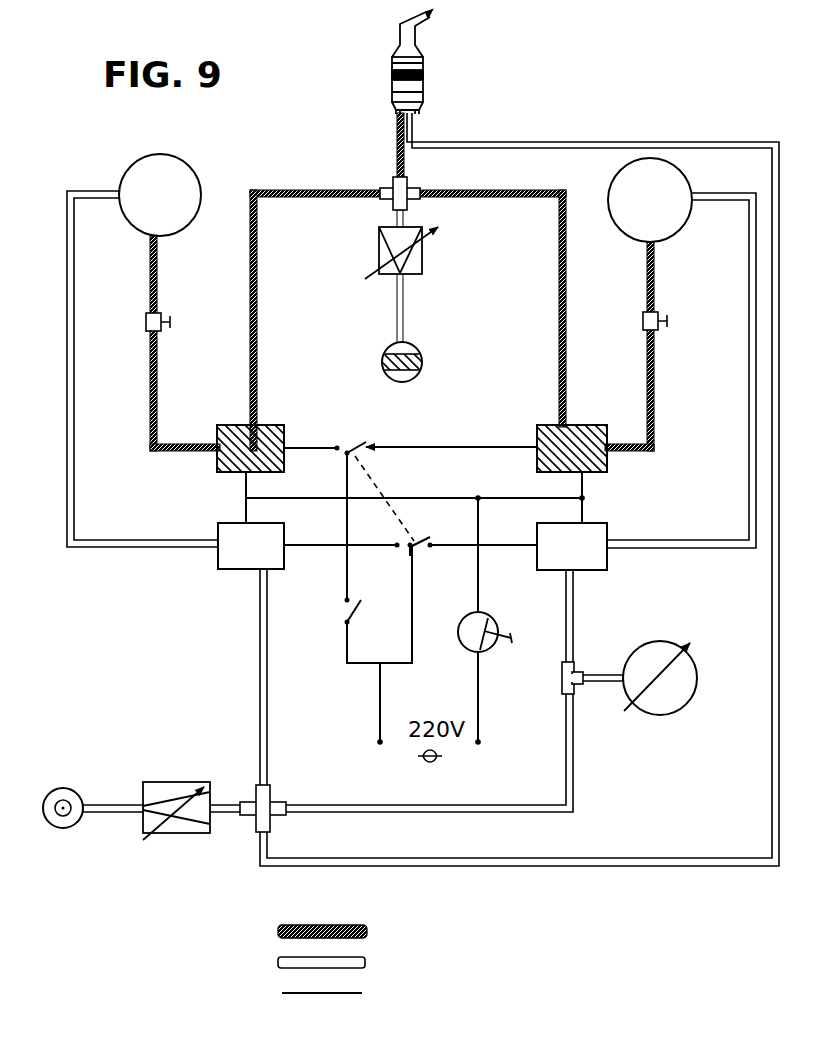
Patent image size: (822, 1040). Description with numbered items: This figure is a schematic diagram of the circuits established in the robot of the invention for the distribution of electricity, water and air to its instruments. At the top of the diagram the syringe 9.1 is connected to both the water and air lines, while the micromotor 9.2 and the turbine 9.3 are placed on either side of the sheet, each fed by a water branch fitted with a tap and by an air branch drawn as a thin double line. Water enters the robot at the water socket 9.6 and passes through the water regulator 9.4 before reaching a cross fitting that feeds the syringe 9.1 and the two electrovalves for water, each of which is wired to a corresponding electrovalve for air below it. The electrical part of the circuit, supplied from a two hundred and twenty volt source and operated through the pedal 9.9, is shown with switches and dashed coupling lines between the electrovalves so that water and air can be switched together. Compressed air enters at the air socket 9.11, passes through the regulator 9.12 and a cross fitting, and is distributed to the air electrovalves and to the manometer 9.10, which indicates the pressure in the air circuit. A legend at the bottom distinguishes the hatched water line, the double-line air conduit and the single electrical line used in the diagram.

The syringe 9.1 is at (425, 62).
The micromotor 9.2 is at (172, 194).
The turbine 9.3 is at (664, 197).
The water regulator 9.4 is at (411, 253).
The water socket 9.6 is at (419, 362).
The pedal 9.9 is at (493, 628).
The manometer 9.10 is at (682, 678).
The air socket 9.11 is at (61, 796).
The regulator 9.12 is at (176, 798).